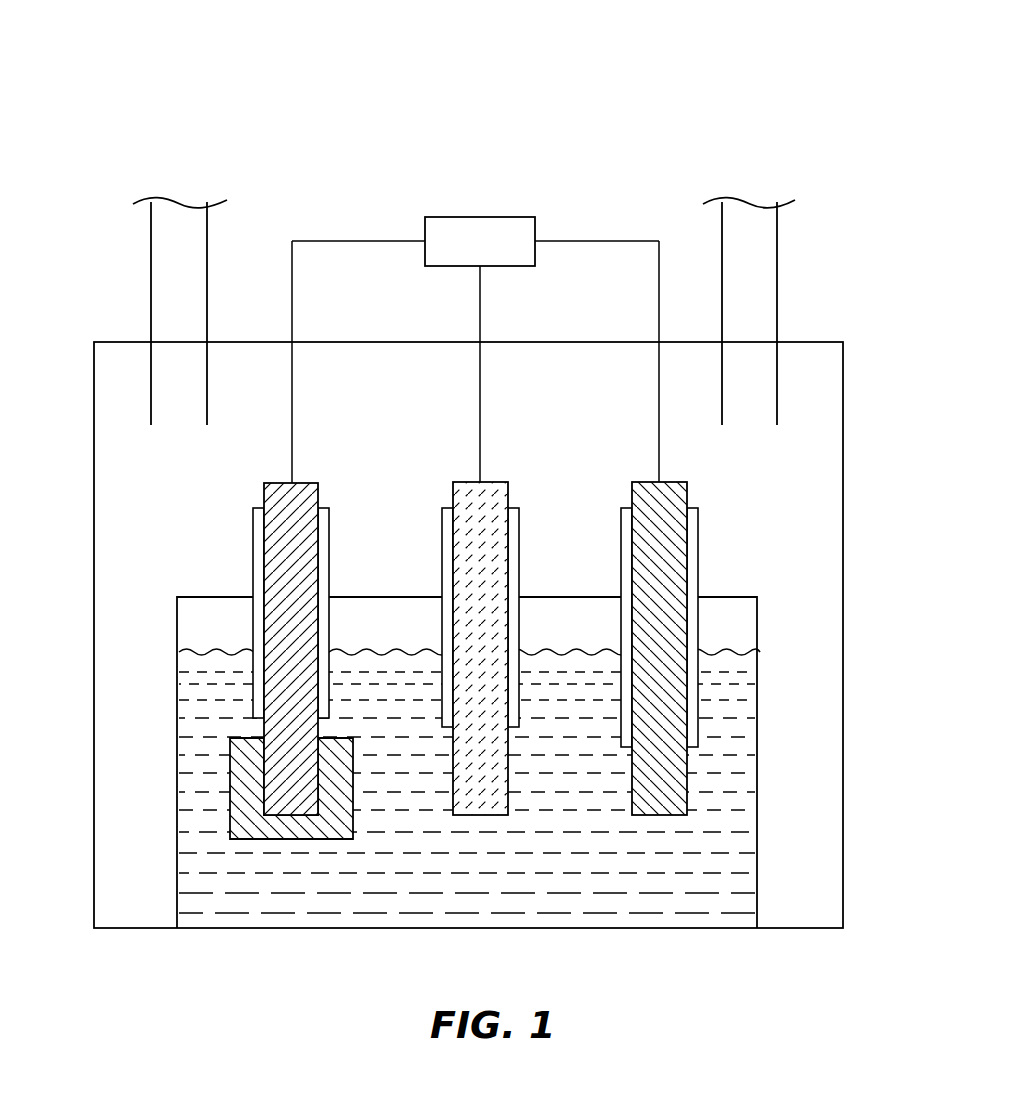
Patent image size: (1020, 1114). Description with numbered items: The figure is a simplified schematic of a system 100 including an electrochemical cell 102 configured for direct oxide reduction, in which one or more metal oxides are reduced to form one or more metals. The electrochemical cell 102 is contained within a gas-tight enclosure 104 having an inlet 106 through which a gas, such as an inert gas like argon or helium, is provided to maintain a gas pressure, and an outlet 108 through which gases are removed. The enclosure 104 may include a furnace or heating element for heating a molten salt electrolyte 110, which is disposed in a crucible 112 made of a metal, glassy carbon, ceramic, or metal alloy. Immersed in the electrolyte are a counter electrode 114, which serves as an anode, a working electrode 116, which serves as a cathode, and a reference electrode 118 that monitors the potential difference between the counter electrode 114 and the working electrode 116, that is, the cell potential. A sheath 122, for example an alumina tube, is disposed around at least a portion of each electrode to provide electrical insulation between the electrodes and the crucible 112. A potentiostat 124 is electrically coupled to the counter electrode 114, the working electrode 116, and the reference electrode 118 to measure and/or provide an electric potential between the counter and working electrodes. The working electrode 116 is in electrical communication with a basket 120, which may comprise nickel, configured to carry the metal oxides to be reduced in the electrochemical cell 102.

The system 100 is at (76, 108).
The electrochemical cell 102 is at (762, 574).
The gas-tight enclosure 104 is at (843, 425).
The inlet 106 is at (168, 262).
The outlet 108 is at (752, 271).
The molten salt electrolyte 110 is at (598, 885).
The crucible 112 is at (177, 620).
The counter electrode 114 is at (632, 497).
The working electrode 116 is at (264, 533).
The reference electrode 118 is at (452, 497).
The basket 120 is at (230, 781).
The sheath 122 is at (323, 538).
The potentiostat 124 is at (459, 254).